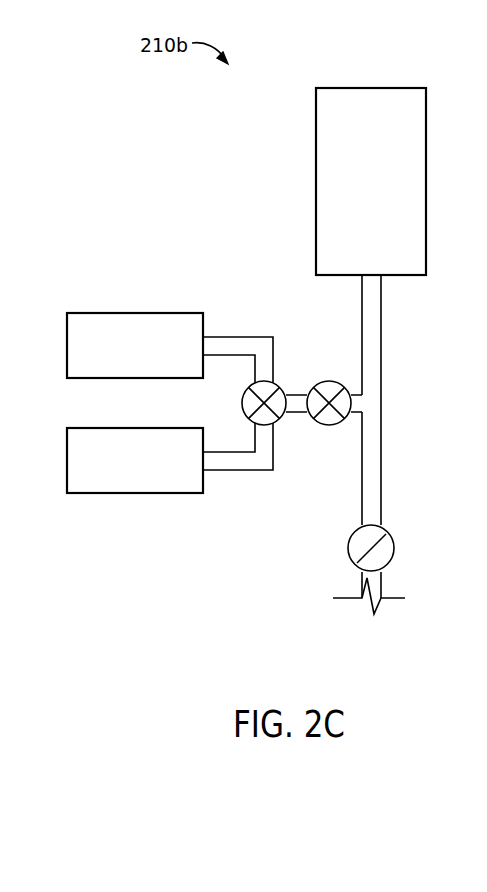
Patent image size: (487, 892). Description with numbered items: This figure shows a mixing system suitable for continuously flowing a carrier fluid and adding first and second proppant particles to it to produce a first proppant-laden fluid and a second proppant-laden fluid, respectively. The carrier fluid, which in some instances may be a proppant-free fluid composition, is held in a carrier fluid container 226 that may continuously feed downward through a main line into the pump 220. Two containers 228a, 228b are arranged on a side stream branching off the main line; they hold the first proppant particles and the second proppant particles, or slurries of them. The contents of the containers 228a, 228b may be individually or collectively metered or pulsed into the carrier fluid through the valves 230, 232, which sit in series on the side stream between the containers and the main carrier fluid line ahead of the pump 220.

The pump 220 is at (394, 548).
The carrier fluid container 226 is at (408, 275).
The container 228a is at (137, 313).
The container 228b is at (137, 493).
The valve 230 is at (277, 384).
The valve 232 is at (333, 426).